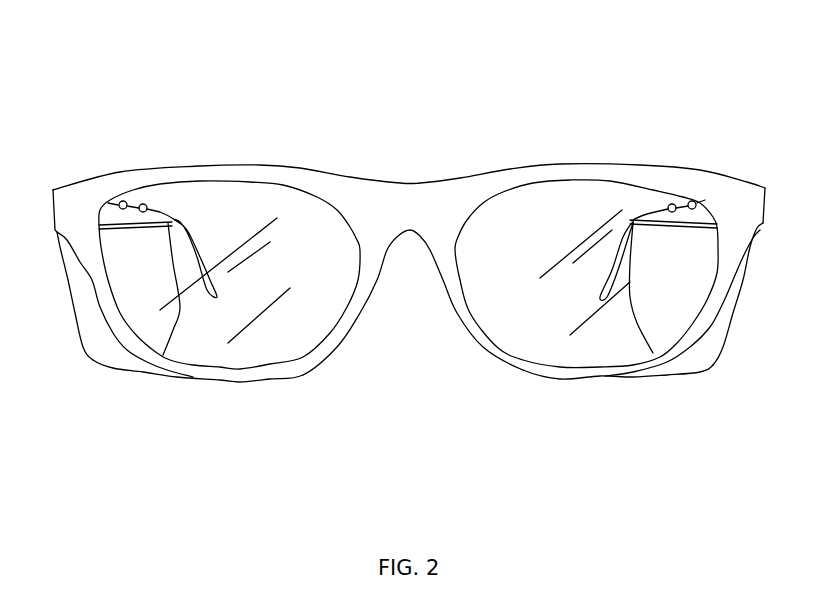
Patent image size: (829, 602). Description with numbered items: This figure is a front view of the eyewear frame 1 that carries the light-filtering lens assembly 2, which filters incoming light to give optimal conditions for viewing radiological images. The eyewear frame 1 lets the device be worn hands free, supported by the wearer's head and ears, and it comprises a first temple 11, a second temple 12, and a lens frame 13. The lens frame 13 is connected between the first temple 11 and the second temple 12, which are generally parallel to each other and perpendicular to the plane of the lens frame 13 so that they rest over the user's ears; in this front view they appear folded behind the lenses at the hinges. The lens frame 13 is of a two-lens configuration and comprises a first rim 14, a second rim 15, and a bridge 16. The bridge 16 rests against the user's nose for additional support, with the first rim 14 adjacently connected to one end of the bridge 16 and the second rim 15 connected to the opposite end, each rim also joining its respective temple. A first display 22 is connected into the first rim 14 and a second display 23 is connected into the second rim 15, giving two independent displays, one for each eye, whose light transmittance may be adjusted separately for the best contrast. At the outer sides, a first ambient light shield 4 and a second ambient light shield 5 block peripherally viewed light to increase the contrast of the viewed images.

The eyewear frame 1 is at (477, 82).
The light-filtering lens assembly 2 is at (75, 220).
The first ambient light shield 4 is at (83, 317).
The second ambient light shield 5 is at (710, 360).
The first temple 11 is at (153, 212).
The second temple 12 is at (655, 213).
The lens frame 13 is at (770, 213).
The first rim 14 is at (223, 380).
The second rim 15 is at (603, 377).
The bridge 16 is at (410, 227).
The first display 22 is at (298, 340).
The second display 23 is at (517, 347).